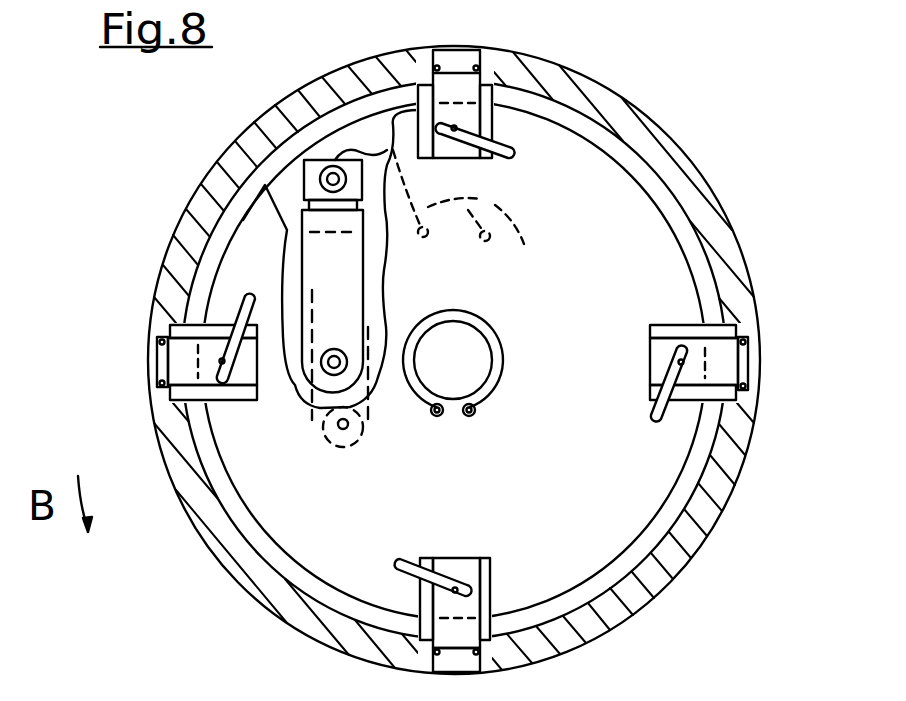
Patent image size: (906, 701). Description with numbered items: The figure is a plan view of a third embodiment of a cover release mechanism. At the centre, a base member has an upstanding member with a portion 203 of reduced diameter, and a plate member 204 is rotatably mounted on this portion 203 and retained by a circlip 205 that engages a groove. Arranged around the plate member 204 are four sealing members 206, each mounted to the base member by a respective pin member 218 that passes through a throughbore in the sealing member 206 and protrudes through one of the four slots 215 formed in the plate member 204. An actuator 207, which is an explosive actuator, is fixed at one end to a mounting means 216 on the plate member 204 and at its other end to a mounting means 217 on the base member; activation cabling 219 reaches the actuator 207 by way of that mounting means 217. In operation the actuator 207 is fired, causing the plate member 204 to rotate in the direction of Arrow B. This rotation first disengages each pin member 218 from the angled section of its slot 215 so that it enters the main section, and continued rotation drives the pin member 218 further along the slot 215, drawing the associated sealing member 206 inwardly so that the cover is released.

The portion of reduced diameter 203 is at (474, 364).
The plate member 204 is at (248, 241).
The circlip 205 is at (487, 392).
The sealing member 206 is at (157, 366).
The actuator 207 is at (352, 303).
The slot 215 is at (243, 298).
The mounting means 216 is at (321, 365).
The mounting means 217 is at (303, 170).
The pin member 218 is at (478, 558).
The activation cabling 219 is at (524, 244).